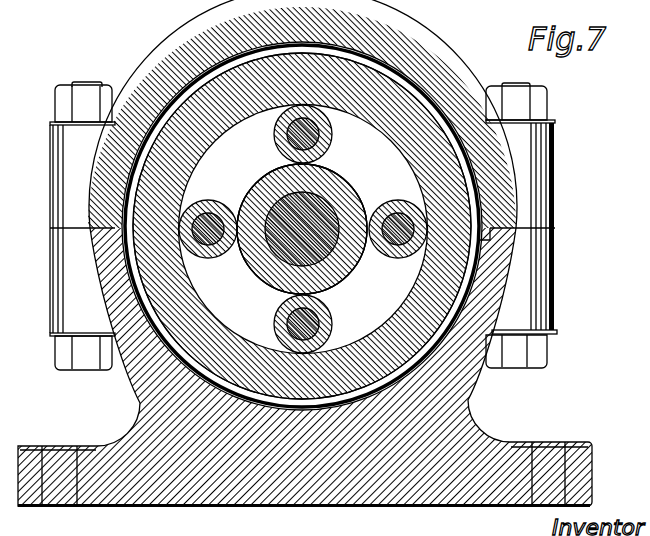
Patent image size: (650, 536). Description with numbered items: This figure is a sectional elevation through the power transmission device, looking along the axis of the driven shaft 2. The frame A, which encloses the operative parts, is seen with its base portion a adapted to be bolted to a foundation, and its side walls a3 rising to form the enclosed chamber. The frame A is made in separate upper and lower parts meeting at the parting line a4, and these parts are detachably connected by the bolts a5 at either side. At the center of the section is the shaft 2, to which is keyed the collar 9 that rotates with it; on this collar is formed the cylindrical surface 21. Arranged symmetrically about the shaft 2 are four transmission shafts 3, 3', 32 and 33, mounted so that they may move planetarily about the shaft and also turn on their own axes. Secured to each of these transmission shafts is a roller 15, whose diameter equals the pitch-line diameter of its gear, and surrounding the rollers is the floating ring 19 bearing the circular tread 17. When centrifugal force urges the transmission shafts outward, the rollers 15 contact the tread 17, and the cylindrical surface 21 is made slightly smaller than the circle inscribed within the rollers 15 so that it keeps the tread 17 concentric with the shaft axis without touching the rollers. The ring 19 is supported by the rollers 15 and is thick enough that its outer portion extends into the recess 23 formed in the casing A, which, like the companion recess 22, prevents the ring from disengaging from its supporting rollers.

The circular tread 17 is at (174, 55).
The side walls a3 is at (415, 34).
The floating ring 19 is at (390, 88).
The recess 23 is at (425, 102).
The bolts a5 is at (533, 85).
The parting line a4 is at (556, 221).
The rollers 15 is at (216, 200).
The transmission shaft 3 is at (312, 134).
The collar 9 is at (346, 178).
The recess 22 is at (302, 225).
The transmission shaft 33 is at (210, 247).
The shaft 2 is at (258, 277).
The cylindrical surface 21 is at (318, 292).
The transmission shaft 3' is at (398, 243).
The transmission shaft 32 is at (333, 323).
The frame A is at (478, 423).
The base portion a is at (400, 507).